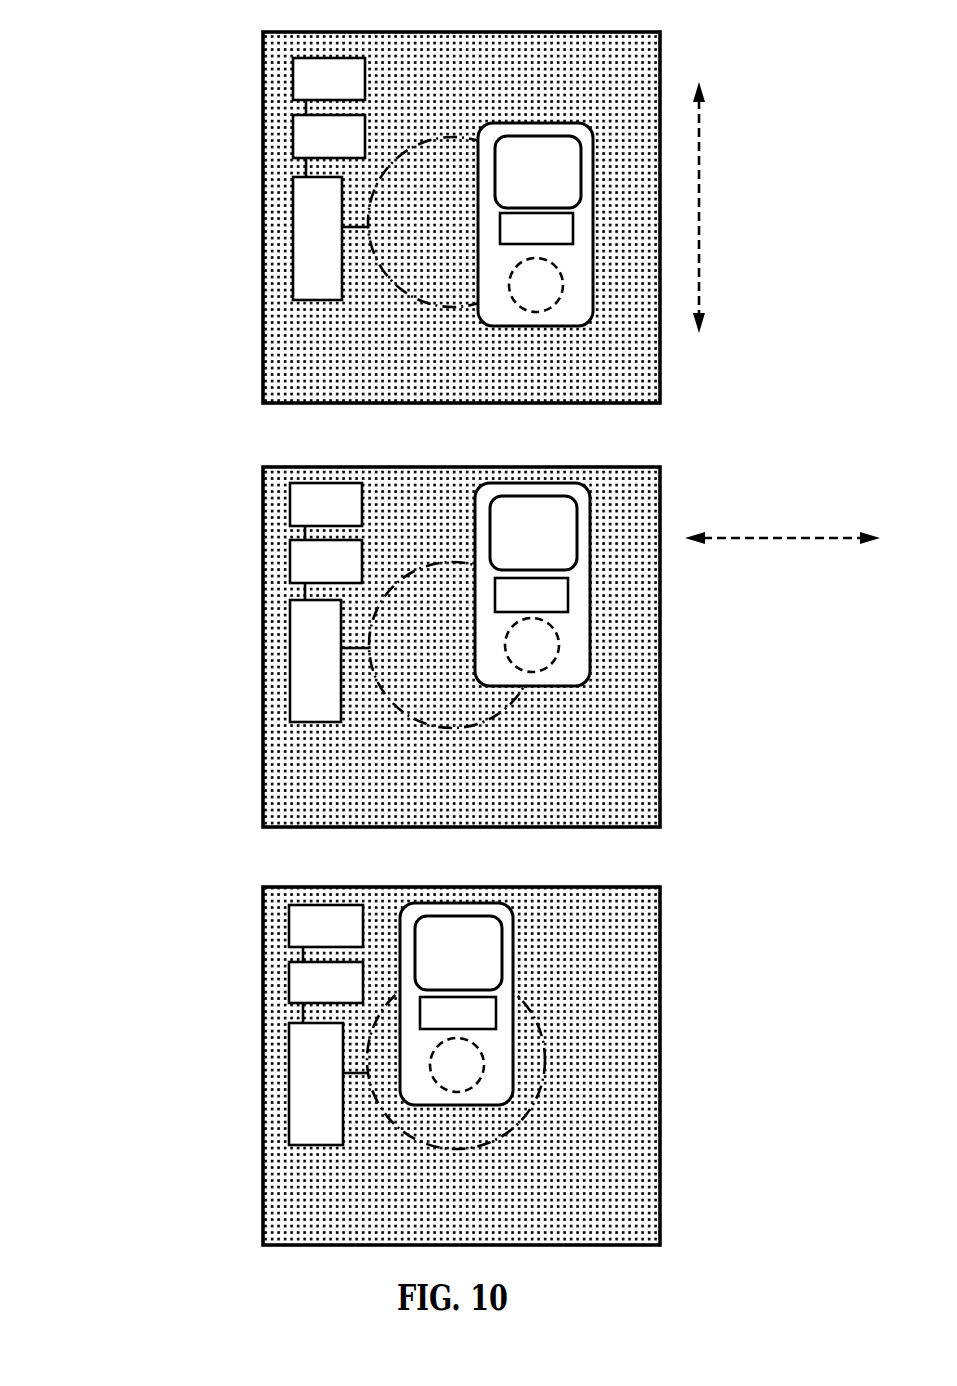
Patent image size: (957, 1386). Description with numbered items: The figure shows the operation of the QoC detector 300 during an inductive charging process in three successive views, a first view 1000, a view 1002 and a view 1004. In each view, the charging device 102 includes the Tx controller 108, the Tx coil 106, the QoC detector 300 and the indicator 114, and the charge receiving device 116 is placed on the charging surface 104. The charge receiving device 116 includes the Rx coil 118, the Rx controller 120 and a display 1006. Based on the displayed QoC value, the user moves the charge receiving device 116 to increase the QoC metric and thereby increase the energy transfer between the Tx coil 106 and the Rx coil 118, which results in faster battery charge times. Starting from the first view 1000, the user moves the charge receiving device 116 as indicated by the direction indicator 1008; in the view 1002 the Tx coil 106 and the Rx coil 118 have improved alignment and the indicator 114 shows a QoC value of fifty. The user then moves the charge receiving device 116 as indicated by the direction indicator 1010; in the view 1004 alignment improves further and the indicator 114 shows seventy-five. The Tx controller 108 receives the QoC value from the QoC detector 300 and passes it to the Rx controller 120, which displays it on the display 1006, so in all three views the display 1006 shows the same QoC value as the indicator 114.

The first view 1000 is at (106, 43).
The view 1002 is at (114, 471).
The view 1004 is at (119, 906).
The display 1006 is at (519, 530).
The direction indicator 1008 is at (744, 207).
The direction indicator 1010 is at (782, 518).
The charging device 102 is at (412, 640).
The charging surface 104 is at (602, 386).
The Tx coil 106 is at (441, 666).
The Tx controller 108 is at (274, 661).
The indicator 114 is at (285, 497).
The charge receiving device 116 is at (502, 598).
The Rx coil 118 is at (495, 708).
The Rx controller 120 is at (533, 613).
The QoC detector 300 is at (285, 561).